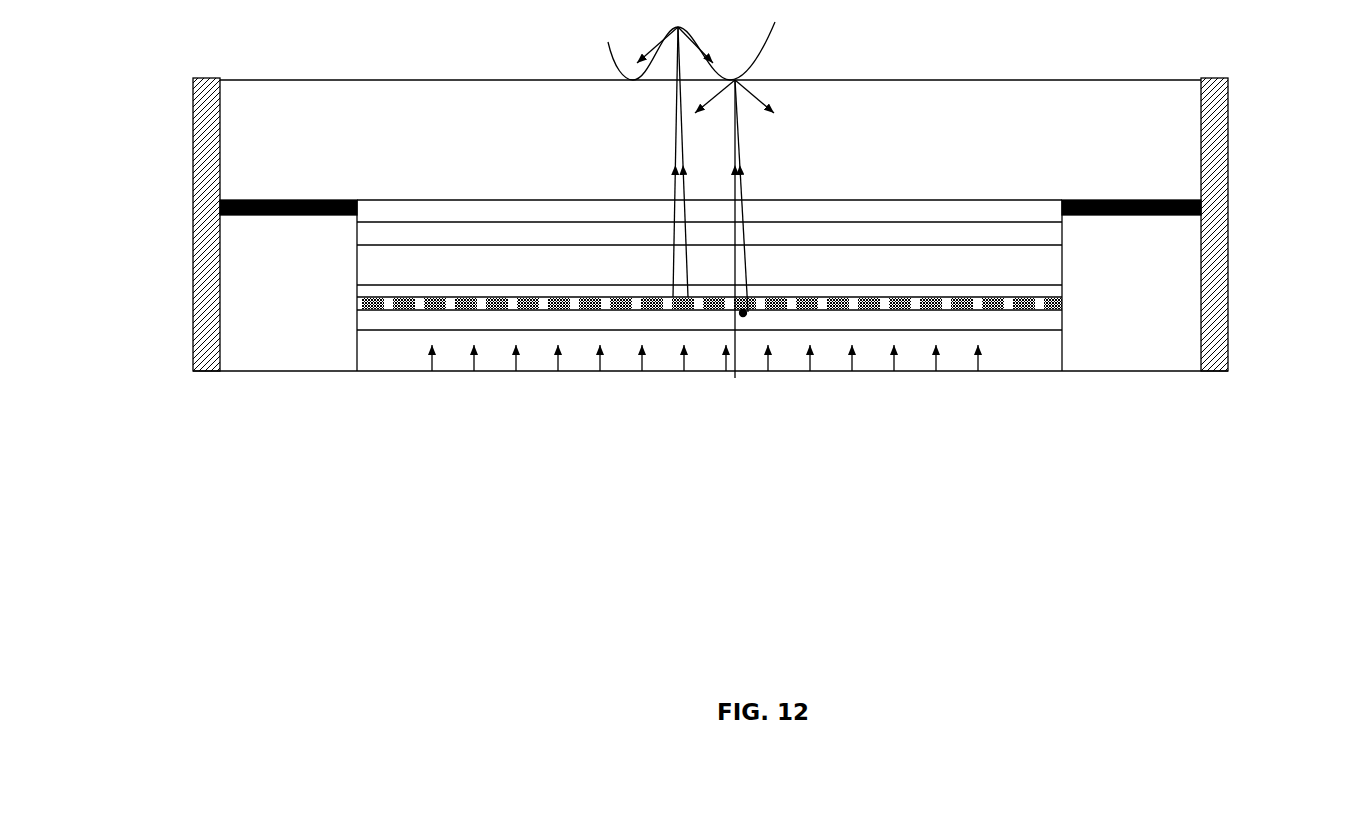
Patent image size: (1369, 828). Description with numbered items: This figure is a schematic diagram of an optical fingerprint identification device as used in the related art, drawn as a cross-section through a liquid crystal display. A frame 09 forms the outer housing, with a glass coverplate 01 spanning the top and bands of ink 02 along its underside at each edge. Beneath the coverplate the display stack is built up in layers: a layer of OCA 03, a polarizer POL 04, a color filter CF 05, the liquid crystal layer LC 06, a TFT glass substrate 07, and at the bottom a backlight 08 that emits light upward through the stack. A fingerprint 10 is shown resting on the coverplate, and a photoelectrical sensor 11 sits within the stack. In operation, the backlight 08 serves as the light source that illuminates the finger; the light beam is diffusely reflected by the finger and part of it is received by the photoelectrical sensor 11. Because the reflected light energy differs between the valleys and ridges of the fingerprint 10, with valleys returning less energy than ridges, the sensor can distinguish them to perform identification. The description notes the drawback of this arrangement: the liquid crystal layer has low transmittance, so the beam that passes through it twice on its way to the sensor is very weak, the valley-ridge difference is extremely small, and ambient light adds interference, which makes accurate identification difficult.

The glass coverplate 01 is at (1168, 145).
The ink 02 is at (1203, 212).
The OCA 03 is at (367, 205).
The POL 04 is at (390, 232).
The CF 05 is at (416, 266).
The LC 06 is at (442, 293).
The TFT glass substrate 07 is at (468, 315).
The backlight 08 is at (493, 348).
The frame 09 is at (206, 264).
The fingerprint 10 is at (777, 47).
The photoelectrical sensor 11 is at (738, 316).